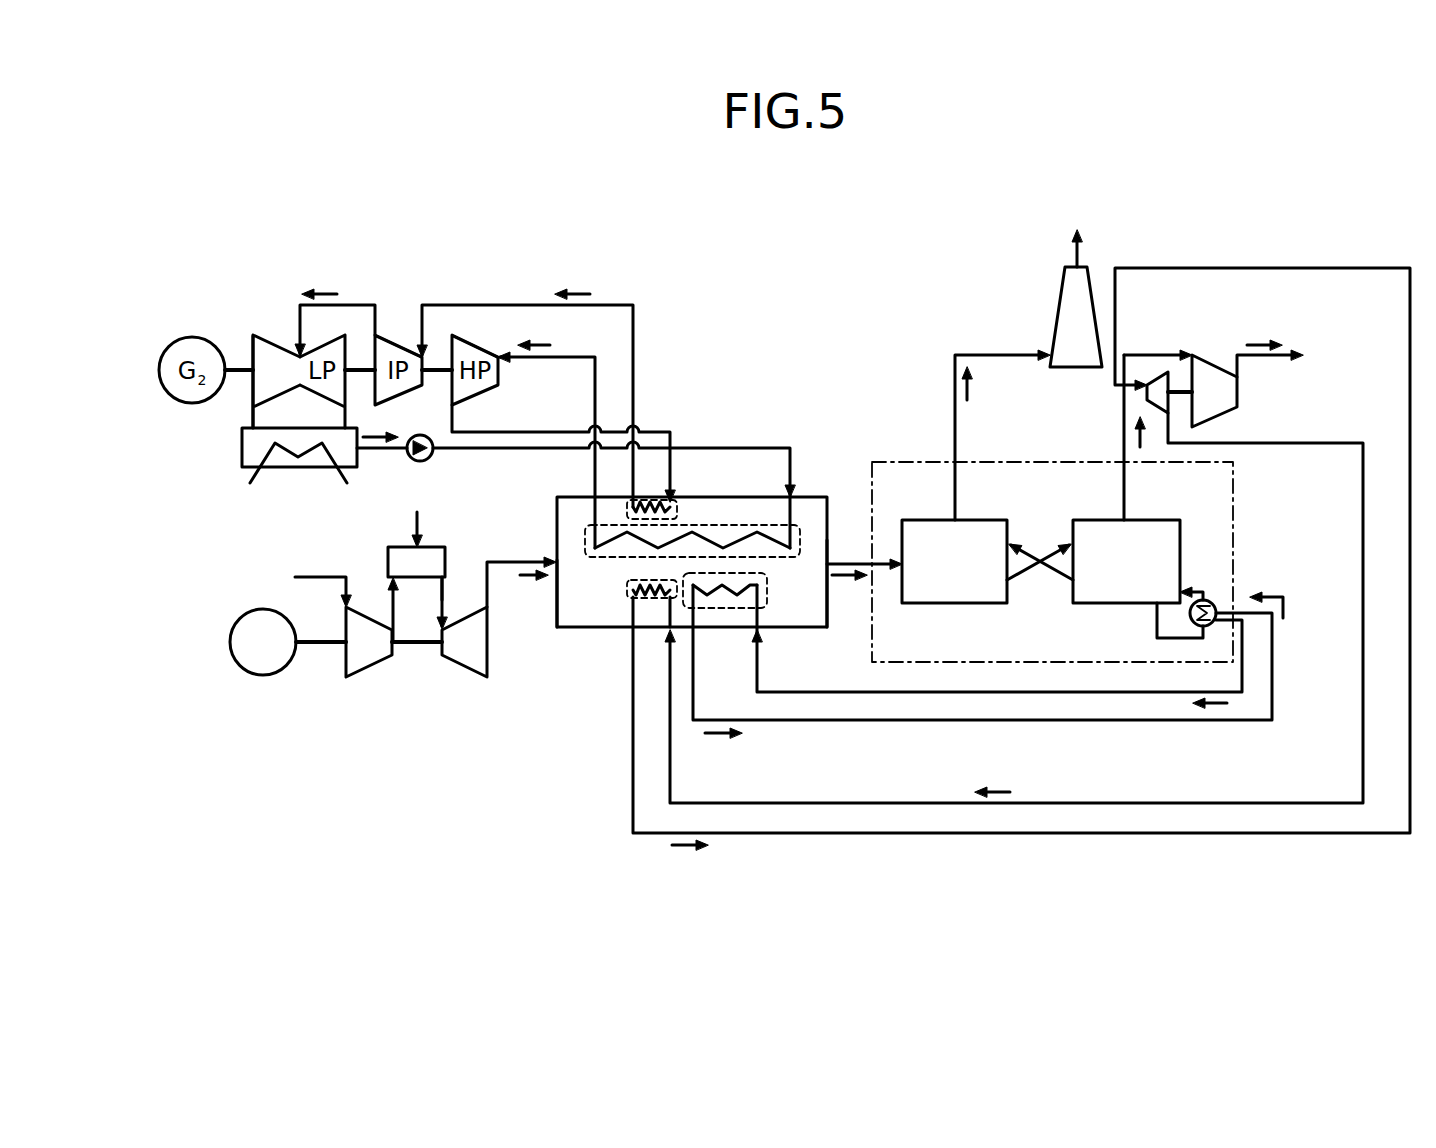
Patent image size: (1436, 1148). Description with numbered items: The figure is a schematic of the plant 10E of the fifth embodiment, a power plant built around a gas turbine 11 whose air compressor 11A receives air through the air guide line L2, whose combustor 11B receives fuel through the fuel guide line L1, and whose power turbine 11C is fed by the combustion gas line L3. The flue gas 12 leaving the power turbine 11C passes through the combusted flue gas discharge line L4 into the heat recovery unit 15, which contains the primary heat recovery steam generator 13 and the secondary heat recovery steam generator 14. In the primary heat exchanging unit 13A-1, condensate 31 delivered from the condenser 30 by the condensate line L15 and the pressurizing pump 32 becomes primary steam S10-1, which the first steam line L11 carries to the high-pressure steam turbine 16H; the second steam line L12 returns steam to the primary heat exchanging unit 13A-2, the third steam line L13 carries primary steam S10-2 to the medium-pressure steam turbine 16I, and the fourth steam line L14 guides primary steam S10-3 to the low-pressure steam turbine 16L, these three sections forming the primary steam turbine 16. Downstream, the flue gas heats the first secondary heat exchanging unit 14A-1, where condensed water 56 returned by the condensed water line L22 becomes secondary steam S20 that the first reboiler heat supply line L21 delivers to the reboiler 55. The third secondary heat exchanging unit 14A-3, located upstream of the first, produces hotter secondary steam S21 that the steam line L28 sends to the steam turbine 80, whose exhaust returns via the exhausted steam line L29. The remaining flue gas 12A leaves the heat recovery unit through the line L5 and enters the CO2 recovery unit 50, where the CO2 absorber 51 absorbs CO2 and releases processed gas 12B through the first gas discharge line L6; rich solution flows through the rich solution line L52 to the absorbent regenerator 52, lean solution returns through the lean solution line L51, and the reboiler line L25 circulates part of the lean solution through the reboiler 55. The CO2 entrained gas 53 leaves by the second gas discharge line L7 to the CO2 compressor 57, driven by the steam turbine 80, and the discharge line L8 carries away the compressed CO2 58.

The plant 10E is at (839, 266).
The gas turbine 11 is at (327, 763).
The air compressor 11A is at (370, 667).
The combustor 11B is at (418, 580).
The power turbine 11C is at (463, 667).
The flue gas 12 is at (525, 604).
The flue gas discharged from the heat recovery unit 12A is at (838, 612).
The processed gas 12B is at (1073, 256).
The primary heat recovery steam generator 13 is at (692, 508).
The primary heat exchanging unit 13A-1 is at (747, 525).
The primary heat exchanging unit 13A-2 is at (655, 502).
The secondary heat recovery steam generator 14 is at (690, 622).
The first secondary heat exchanging unit 14A-1 is at (727, 610).
The third secondary heat exchanging unit 14A-3 is at (623, 610).
The heat recovery unit 15 is at (553, 615).
The primary steam turbine 16 is at (360, 232).
The low-pressure steam turbine 16L is at (330, 333).
The medium-pressure steam turbine 16I is at (397, 343).
The high-pressure steam turbine 16H is at (475, 347).
The condenser 30 is at (242, 450).
The condensate 31 is at (380, 430).
The pressurizing pump 32 is at (434, 455).
The CO2 recovery unit 50 is at (1235, 482).
The CO2 absorber 51 is at (965, 520).
The absorbent regenerator 52 is at (1135, 520).
The CO2 entrained gas 53 is at (1150, 450).
The reboiler 55 is at (1211, 600).
The condensed water 56 is at (1218, 706).
The CO2 compressor 57 is at (1220, 363).
The compressed CO2 58 is at (1262, 342).
The steam turbine 80 is at (1157, 373).
The fuel guide line L1 is at (420, 520).
The air guide line L2 is at (320, 577).
The combustion gas line L3 is at (447, 593).
The combusted flue gas discharge line L4 is at (513, 560).
The exhaust gas line to absorber L5 is at (845, 560).
The first gas discharge line L6 is at (995, 355).
The second gas discharge line L7 is at (1153, 353).
The discharge line L8 is at (1268, 365).
The first steam line L11 is at (600, 372).
The second steam line L12 is at (527, 430).
The third steam line L13 is at (637, 320).
The fourth steam line L14 is at (338, 305).
The condensate line L15 is at (532, 450).
The first reboiler heat supply line L21 is at (852, 725).
The condensed water line L22 is at (937, 697).
The reboiler line L25 is at (1157, 607).
The steam line L28 is at (797, 837).
The exhausted steam line L29 is at (880, 807).
The lean solution line L51 is at (1067, 582).
The rich solution line L52 is at (1053, 553).
The primary steam S10-1 is at (540, 343).
The primary steam S10-2 is at (582, 292).
The primary steam S10-3 is at (323, 292).
The secondary steam S20 is at (720, 738).
The secondary steam S21 is at (683, 852).